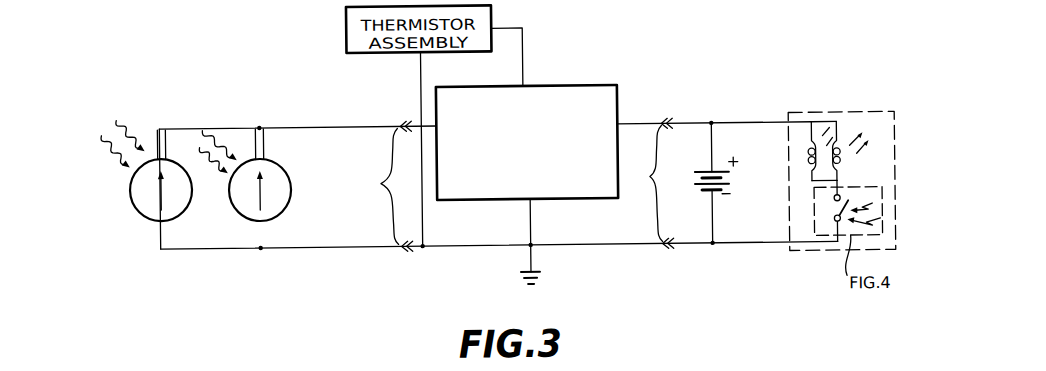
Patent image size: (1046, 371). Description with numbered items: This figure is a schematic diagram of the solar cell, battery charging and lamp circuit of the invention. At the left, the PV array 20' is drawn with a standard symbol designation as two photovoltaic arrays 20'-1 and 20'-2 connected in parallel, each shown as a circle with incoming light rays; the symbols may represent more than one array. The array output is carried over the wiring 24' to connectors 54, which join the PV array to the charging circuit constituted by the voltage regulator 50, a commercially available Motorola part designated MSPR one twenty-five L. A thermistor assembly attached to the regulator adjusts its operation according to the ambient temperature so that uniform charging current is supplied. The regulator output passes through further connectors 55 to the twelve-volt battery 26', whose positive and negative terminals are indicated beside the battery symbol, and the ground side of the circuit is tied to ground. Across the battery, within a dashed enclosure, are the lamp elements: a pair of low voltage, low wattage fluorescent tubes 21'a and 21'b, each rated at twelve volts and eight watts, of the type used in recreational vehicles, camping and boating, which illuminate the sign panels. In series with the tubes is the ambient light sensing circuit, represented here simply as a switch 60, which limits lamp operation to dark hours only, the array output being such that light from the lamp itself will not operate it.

The PV array 20' is at (210, 170).
The first photovoltaic array 20'-1 is at (158, 156).
The second photovoltaic array 20'-2 is at (259, 170).
The conductors / wiring 24' is at (498, 202).
The voltage regulator 50 is at (572, 86).
The connectors 54 is at (381, 186).
The output leads from voltage regulator 55 is at (649, 183).
The battery 26' is at (713, 165).
The fluorescent tube 21'a is at (802, 129).
The fluorescent tube 21'b is at (862, 129).
The switch 60 is at (834, 221).